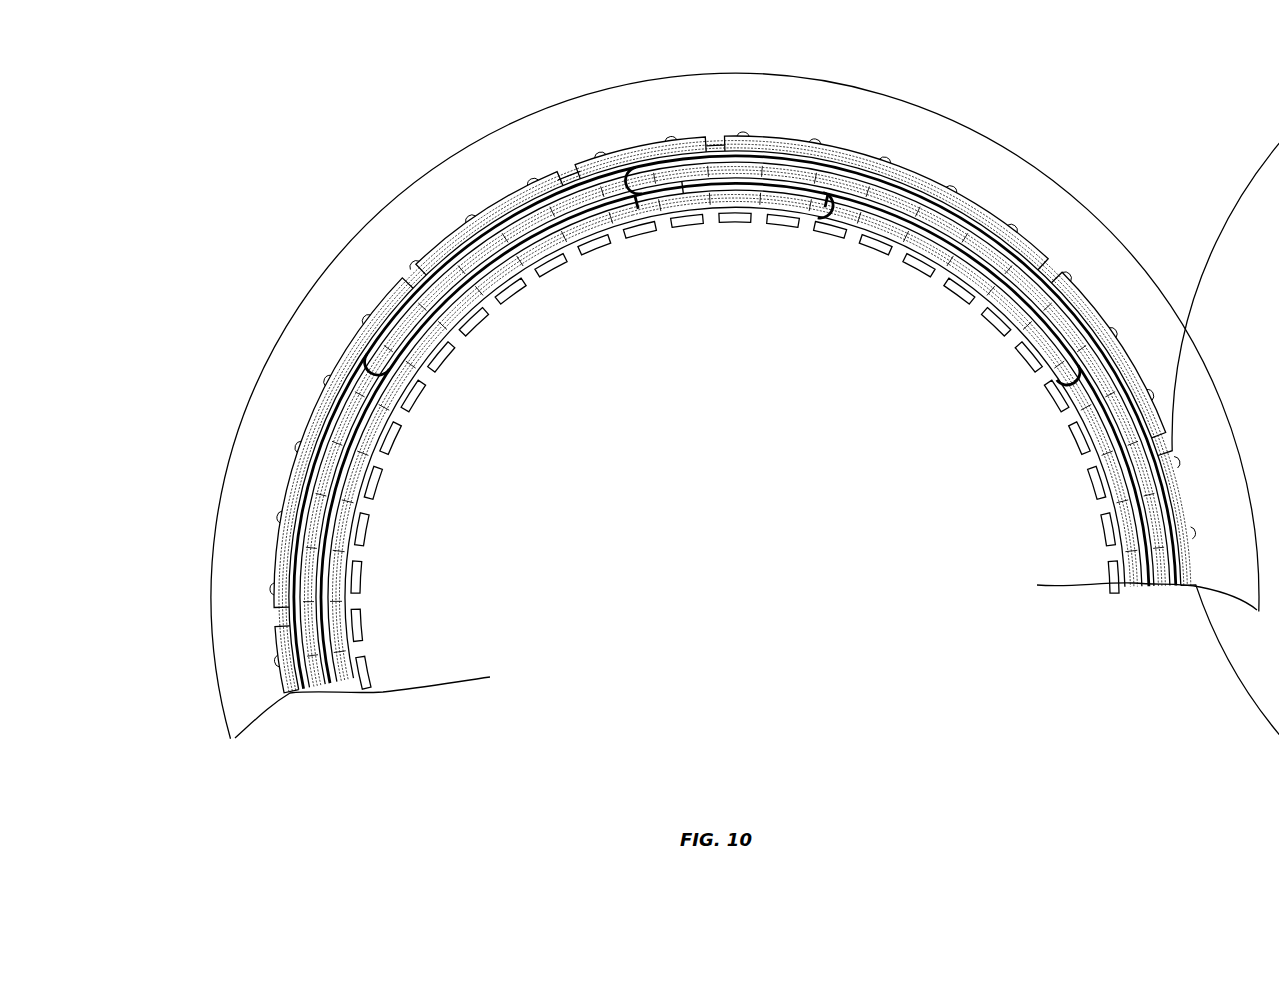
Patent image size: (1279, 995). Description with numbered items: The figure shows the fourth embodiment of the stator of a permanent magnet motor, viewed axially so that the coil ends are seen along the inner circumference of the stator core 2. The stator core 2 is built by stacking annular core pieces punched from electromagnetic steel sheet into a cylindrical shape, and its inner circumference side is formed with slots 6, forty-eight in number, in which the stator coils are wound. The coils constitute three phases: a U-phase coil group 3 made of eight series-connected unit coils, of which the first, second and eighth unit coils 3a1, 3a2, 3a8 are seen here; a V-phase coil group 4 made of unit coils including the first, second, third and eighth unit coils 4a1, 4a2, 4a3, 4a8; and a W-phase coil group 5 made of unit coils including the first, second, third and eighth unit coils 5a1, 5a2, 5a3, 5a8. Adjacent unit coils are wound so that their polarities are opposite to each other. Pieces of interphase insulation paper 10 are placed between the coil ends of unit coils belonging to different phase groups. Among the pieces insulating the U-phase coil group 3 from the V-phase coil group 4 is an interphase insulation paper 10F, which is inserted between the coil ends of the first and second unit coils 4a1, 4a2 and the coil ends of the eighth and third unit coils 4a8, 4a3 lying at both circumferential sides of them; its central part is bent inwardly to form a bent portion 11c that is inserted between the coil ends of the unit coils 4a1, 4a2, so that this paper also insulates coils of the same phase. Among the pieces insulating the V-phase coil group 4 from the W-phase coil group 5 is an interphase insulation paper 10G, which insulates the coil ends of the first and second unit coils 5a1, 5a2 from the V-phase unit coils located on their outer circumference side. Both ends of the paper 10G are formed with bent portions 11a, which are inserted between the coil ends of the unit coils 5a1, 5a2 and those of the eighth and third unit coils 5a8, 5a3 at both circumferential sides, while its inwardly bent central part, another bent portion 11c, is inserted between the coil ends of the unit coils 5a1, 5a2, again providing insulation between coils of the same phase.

The stator core 2 is at (915, 123).
The U-phase coil group 3 is at (851, 104).
The first unit coil of the U-phase coil group 3a1 is at (340, 357).
The second unit coil of the U-phase coil group 3a2 is at (447, 233).
The eighth unit coil of the U-phase coil group 3a8 is at (278, 637).
The V-phase coil group 4 is at (1083, 290).
The first unit coil of the V-phase coil group 4a1 is at (600, 172).
The second unit coil of the V-phase coil group 4a2 is at (642, 180).
The third unit coil of the V-phase coil group 4a3 is at (943, 273).
The eighth unit coil of the V-phase coil group 4a8 is at (393, 417).
The W-phase coil group 5 is at (1100, 510).
The first unit coil of the W-phase coil group 5a1 is at (763, 203).
The second unit coil of the W-phase coil group 5a2 is at (857, 227).
The third unit coil of the W-phase coil group 5a3 is at (1083, 413).
The eighth unit coil of the W-phase coil group 5a8 is at (517, 263).
The slot 6 is at (723, 137).
The interphase insulation paper 10 is at (1113, 370).
The interphase insulation paper 10F is at (562, 173).
The interphase insulation paper 10G is at (682, 193).
The bent portion 11a is at (395, 368).
The bent portion 11c is at (633, 225).